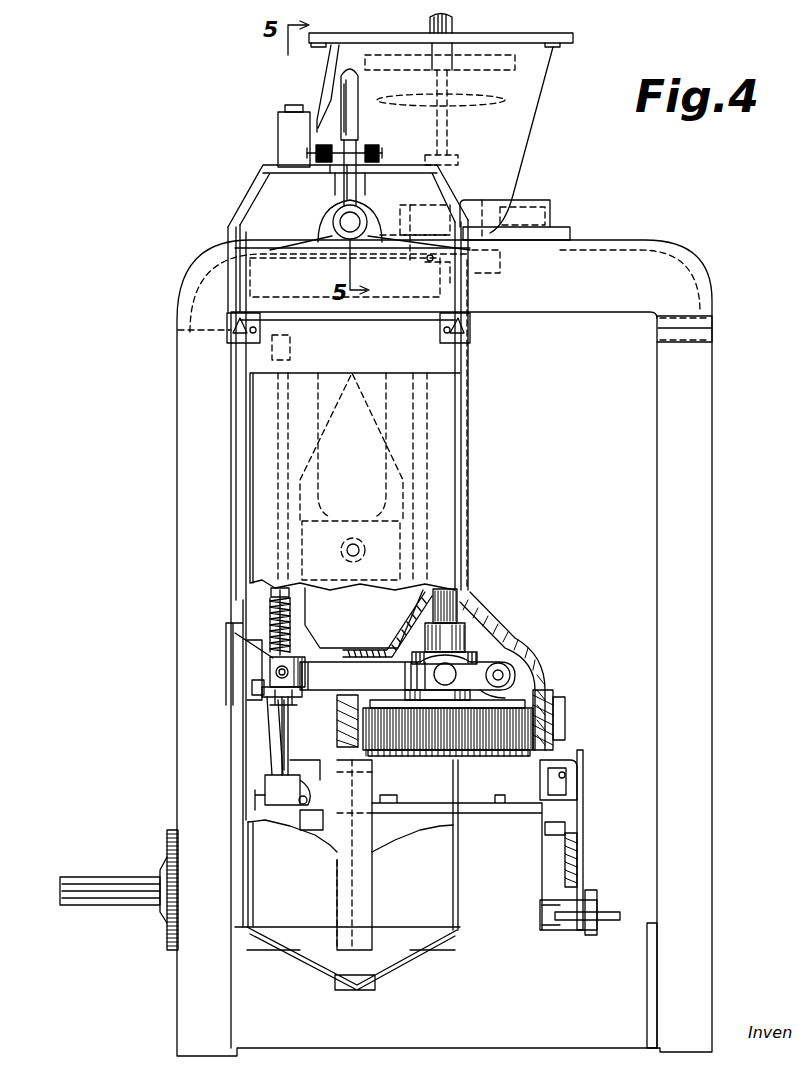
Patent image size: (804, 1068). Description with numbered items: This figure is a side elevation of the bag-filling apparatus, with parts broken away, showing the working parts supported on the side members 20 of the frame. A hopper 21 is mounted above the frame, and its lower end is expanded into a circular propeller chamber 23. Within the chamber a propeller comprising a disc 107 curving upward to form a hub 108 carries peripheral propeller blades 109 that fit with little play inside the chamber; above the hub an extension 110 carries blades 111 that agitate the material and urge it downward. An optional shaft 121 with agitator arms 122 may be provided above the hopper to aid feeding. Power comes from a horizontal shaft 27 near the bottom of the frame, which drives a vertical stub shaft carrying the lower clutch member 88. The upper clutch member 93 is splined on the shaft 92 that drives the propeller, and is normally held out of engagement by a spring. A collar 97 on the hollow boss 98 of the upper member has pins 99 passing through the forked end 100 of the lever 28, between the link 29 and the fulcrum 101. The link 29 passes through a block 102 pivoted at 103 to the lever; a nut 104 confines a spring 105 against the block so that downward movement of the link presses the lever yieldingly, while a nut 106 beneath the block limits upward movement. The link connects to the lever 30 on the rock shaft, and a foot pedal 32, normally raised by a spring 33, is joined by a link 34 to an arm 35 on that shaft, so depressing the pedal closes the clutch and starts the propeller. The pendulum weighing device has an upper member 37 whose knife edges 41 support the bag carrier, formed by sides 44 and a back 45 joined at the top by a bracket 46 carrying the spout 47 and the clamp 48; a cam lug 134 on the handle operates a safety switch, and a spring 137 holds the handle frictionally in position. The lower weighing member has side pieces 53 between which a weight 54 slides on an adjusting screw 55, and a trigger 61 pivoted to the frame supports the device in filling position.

The side members 20 is at (180, 572).
The hopper 21 is at (528, 96).
The propeller chamber 23 is at (548, 208).
The horizontal shaft 27 is at (118, 878).
The lever 28 is at (360, 664).
The link 29 is at (292, 722).
The lever 30 is at (273, 736).
The foot pedal 32 is at (612, 913).
The spring 33 is at (576, 869).
The link 34 is at (584, 822).
The arm 35 is at (570, 760).
The upper member 37 is at (466, 356).
The knife edges 41 is at (232, 326).
The sides 44 is at (245, 412).
The back 45 is at (262, 576).
The bracket 46 is at (272, 166).
The spout 47 is at (345, 222).
The clamp 48 is at (355, 100).
The side pieces 53 is at (316, 553).
The weight 54 is at (356, 380).
The screw 55 is at (360, 552).
The trigger 61 is at (300, 377).
The clutch member 88 is at (467, 742).
The shaft 92 is at (455, 600).
The upper clutch member 93 is at (428, 728).
The collar 97 is at (496, 645).
The hollow boss 98 is at (467, 630).
The pins 99 is at (440, 668).
The forked end 100 is at (502, 684).
The fulcrum 101 is at (508, 676).
The block 102 is at (292, 668).
The pivot 103 is at (296, 666).
The nut 104 is at (290, 593).
The spring 105 is at (290, 619).
The nut 106 is at (288, 681).
The disc 107 is at (483, 215).
The hub 108 is at (417, 197).
The propeller blades 109 is at (372, 226).
The extension 110 is at (440, 130).
The blades 111 is at (468, 104).
The shaft 121 is at (452, 28).
The agitator arms 122 is at (505, 50).
The cam lug 134 is at (338, 162).
The spring 137 is at (351, 149).